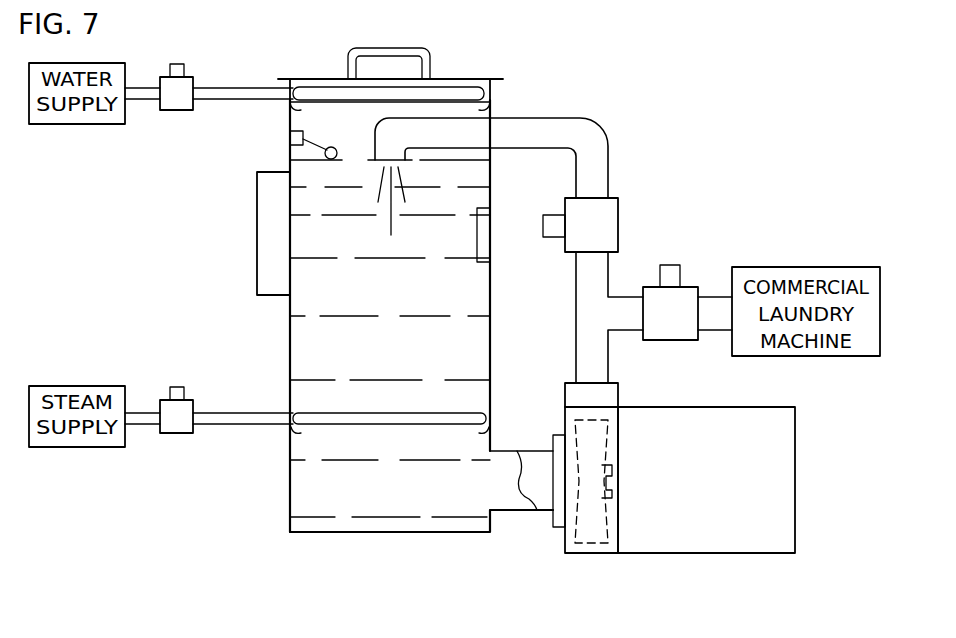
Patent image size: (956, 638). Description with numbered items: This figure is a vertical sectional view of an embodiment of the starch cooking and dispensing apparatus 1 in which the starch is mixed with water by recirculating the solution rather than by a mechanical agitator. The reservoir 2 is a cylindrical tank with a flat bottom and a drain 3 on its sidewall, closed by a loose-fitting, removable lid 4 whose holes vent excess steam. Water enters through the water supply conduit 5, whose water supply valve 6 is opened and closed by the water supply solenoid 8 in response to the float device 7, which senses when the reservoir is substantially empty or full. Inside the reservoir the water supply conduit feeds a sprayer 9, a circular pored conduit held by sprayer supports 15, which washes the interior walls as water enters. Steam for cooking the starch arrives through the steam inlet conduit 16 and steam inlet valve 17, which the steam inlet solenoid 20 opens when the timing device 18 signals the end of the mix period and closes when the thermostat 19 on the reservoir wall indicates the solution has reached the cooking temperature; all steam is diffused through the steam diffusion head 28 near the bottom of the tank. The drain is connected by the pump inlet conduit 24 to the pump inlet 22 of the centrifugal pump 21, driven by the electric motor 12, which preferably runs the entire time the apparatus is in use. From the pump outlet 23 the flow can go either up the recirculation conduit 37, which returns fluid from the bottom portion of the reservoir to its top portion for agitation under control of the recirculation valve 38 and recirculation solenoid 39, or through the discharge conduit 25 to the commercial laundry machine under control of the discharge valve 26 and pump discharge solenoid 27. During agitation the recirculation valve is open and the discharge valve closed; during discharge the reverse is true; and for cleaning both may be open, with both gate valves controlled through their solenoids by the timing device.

The starch cooking and dispensing apparatus 1 is at (606, 78).
The reservoir 2 is at (491, 371).
The drain 3 is at (490, 498).
The lid 4 is at (462, 79).
The water supply conduit 5 is at (222, 92).
The water supply valve 6 is at (172, 110).
The float device 7 is at (290, 138).
The water supply solenoid 8 is at (183, 67).
The sprayer 9 is at (338, 93).
The electric motor 12 is at (795, 507).
The sprayer supports 15 is at (297, 107).
The steam inlet conduit 16 is at (250, 413).
The steam inlet valve 17 is at (176, 433).
The timing device 18 is at (257, 232).
The thermostat 19 is at (486, 233).
The steam inlet solenoid 20 is at (177, 387).
The centrifugal pump 21 is at (597, 553).
The pump inlet 22 is at (554, 528).
The pump outlet 23 is at (608, 393).
The pump inlet conduit 24 is at (537, 511).
The discharge conduit 25 is at (716, 300).
The discharge valve 26 is at (685, 335).
The pump discharge solenoid 27 is at (672, 268).
The steam diffusion head 28 is at (470, 415).
The recirculation conduit 37 is at (592, 136).
The recirculation valve 38 is at (618, 210).
The recirculation solenoid 39 is at (548, 228).